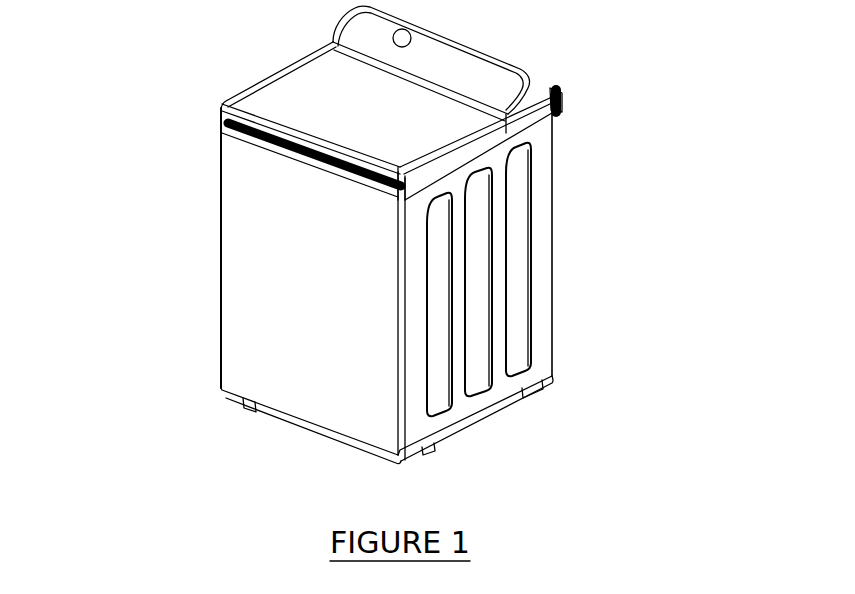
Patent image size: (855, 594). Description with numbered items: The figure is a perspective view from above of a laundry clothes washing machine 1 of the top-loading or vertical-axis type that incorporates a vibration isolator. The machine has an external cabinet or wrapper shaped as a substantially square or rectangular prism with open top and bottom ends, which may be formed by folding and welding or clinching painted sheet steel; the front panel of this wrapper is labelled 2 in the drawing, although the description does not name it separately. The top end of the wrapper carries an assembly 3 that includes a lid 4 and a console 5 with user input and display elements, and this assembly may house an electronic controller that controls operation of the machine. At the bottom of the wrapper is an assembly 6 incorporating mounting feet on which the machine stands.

The laundry clothes washing machine 1 is at (156, 220).
The front panel 2 is at (255, 310).
The assembly 3 is at (268, 72).
The lid 4 is at (374, 109).
The console 5 is at (460, 62).
The assembly 6 is at (545, 388).